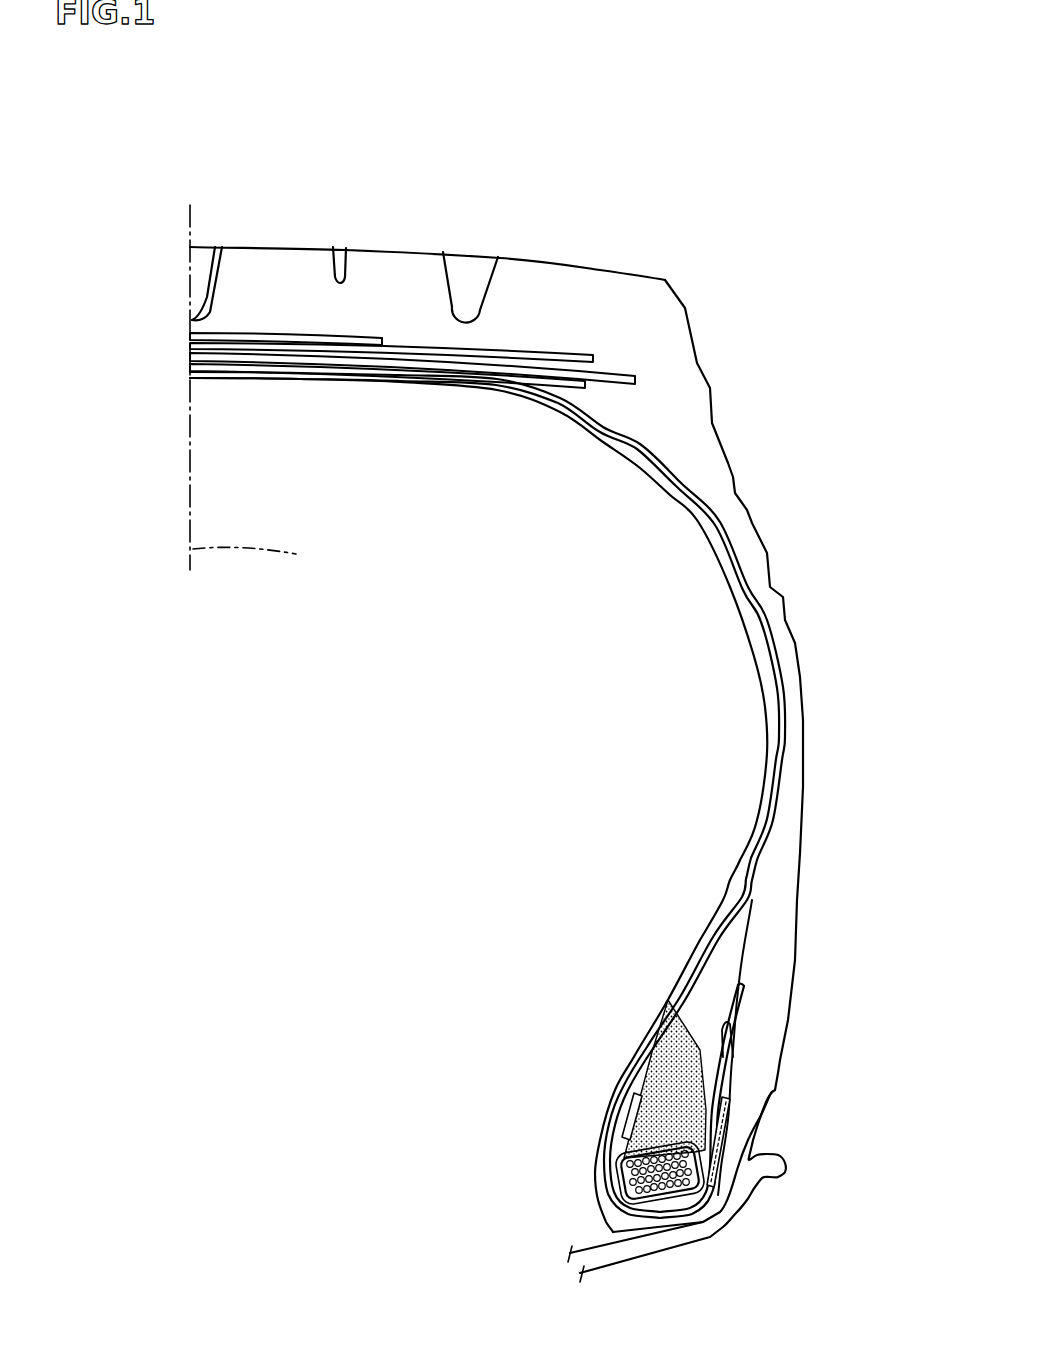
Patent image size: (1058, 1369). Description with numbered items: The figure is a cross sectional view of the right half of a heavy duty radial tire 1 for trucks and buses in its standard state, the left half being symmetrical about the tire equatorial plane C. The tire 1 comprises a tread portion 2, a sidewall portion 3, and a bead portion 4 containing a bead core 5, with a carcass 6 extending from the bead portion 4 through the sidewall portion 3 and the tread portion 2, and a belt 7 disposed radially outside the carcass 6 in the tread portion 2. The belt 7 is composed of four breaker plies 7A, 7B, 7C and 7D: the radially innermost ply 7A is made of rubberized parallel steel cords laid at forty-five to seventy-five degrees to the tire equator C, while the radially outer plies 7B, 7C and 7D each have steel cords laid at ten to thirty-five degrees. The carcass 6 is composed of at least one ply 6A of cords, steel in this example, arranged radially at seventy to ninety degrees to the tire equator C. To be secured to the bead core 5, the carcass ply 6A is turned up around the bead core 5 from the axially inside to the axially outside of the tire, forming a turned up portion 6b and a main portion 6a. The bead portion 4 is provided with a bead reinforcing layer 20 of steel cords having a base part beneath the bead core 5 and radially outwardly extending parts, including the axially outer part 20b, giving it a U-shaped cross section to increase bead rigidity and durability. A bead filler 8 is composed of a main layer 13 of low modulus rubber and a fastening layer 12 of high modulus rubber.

The heavy duty radial tire 1 is at (710, 272).
The tread portion 2 is at (397, 263).
The sidewall portion 3 is at (812, 676).
The bead portion 4 is at (572, 1132).
The bead core 5 is at (666, 1185).
The carcass 6 is at (691, 509).
The carcass ply 6A is at (556, 848).
The main portion 6a is at (752, 893).
The turned up portion 6b is at (728, 1035).
The belt 7 is at (97, 287).
The radially innermost breaker ply 7A is at (190, 368).
The breaker ply 7B is at (190, 356).
The breaker ply 7C is at (190, 345).
The breaker ply 7D is at (190, 335).
The bead filler 8 is at (492, 993).
The fastening layer 12 is at (630, 1095).
The main layer 13 is at (683, 1068).
The bead reinforcing layer 20 is at (664, 1144).
The axially outer part 20b is at (725, 1122).
The tire equatorial plane C is at (257, 558).